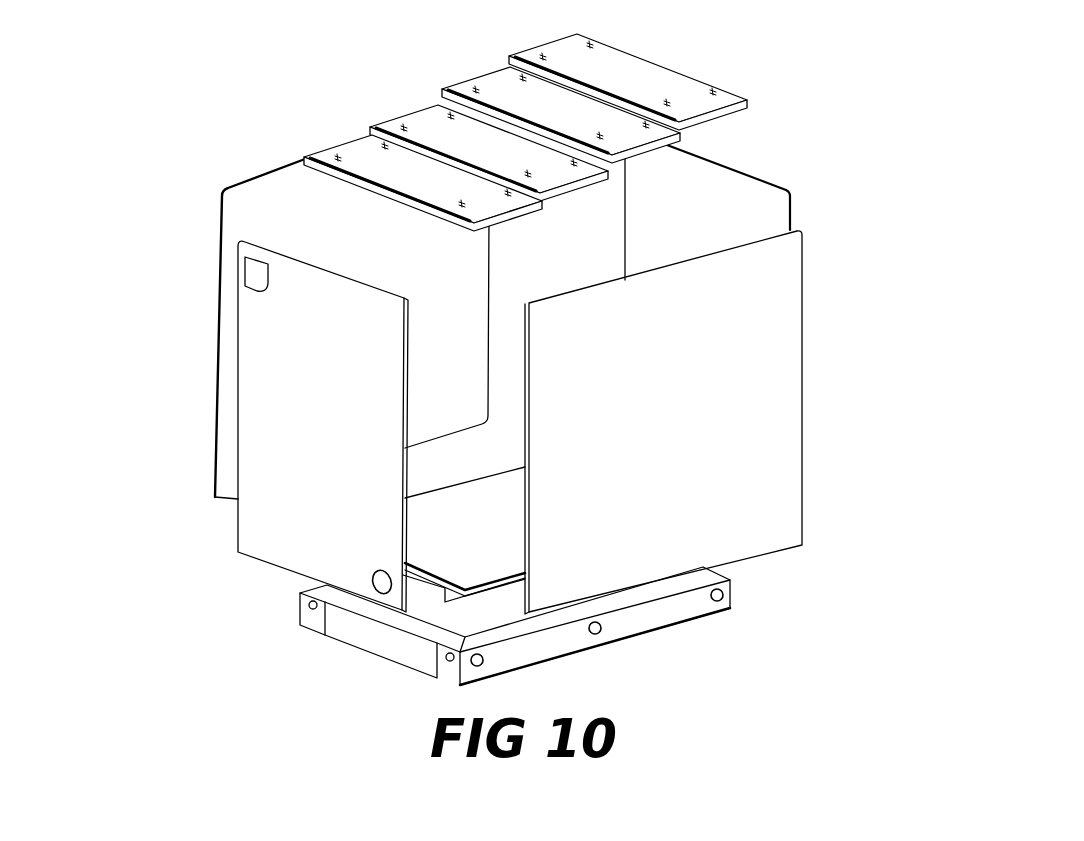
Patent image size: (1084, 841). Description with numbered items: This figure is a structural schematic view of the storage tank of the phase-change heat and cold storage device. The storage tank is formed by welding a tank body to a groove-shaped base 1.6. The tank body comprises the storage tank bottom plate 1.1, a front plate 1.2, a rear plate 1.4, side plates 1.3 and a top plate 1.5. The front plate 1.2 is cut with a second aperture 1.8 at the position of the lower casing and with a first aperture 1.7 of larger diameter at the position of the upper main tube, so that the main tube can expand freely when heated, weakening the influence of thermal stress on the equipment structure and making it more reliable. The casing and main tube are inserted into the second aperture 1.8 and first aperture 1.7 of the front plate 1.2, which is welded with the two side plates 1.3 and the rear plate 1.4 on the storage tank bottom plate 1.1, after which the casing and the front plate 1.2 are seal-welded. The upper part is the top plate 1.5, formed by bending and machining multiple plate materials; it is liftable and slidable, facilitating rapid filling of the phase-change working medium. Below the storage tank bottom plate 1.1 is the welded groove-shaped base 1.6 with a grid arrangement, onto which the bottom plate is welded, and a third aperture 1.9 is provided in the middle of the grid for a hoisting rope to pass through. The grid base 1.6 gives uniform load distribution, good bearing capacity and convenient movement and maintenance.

The storage tank bottom plate 1.1 is at (430, 532).
The front plate 1.2 is at (318, 433).
The side plate 1.3 is at (298, 232).
The rear plate 1.4 is at (643, 258).
The top plate 1.5 is at (643, 87).
The base 1.6 is at (358, 627).
The first aperture 1.7 is at (255, 275).
The second aperture 1.8 is at (377, 575).
The third aperture 1.9 is at (483, 661).